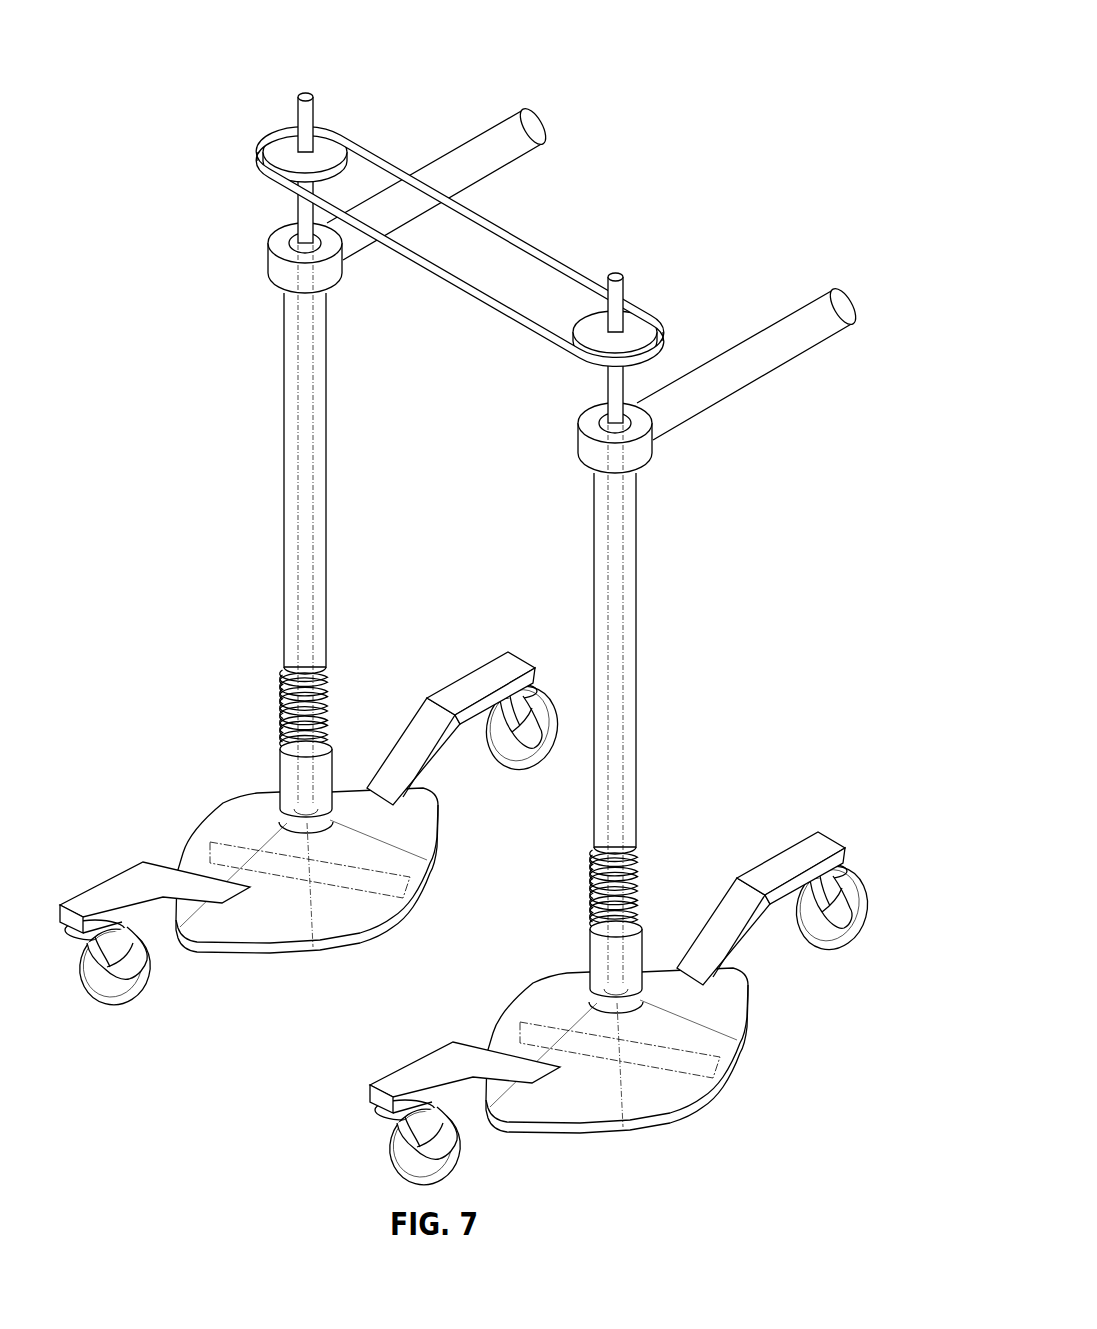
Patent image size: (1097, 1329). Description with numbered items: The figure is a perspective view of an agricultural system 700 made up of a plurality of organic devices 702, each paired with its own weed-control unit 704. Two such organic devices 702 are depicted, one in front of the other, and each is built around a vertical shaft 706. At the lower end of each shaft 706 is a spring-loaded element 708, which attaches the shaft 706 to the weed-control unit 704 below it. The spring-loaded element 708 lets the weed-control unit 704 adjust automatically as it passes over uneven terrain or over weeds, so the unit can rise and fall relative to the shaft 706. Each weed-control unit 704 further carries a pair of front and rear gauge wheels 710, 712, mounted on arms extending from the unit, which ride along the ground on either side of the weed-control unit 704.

The agricultural system 700 is at (468, 600).
The organic device 702 is at (585, 739).
The weed-control unit 704 is at (636, 1033).
The shaft 706 is at (623, 601).
The spring-loaded element 708 is at (640, 870).
The front gauge wheel 710 is at (828, 940).
The rear gauge wheel 712 is at (403, 1160).